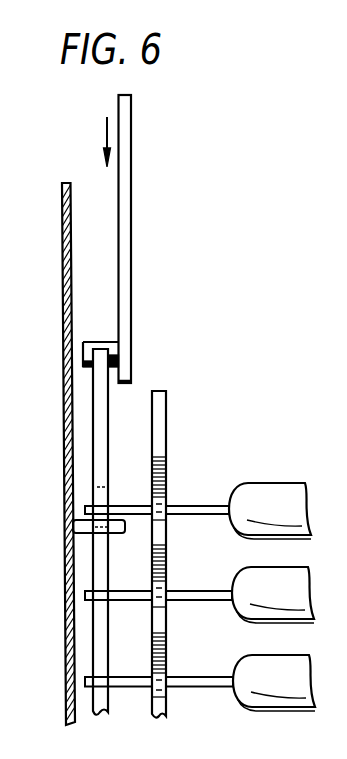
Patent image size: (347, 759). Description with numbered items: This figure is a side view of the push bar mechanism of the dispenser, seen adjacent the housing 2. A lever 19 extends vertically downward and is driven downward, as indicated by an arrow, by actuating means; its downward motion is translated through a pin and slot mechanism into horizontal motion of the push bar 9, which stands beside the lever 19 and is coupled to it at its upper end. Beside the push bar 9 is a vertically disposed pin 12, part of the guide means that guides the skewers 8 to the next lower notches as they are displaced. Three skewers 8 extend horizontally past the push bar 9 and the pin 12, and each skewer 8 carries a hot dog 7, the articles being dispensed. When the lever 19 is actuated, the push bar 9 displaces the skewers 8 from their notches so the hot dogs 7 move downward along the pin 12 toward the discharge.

The housing 2 is at (63, 337).
The hot dogs 7 is at (290, 517).
The skewers 8 is at (188, 503).
The push bar 9 is at (100, 427).
The pins 12 is at (167, 468).
The levers 19 is at (123, 220).